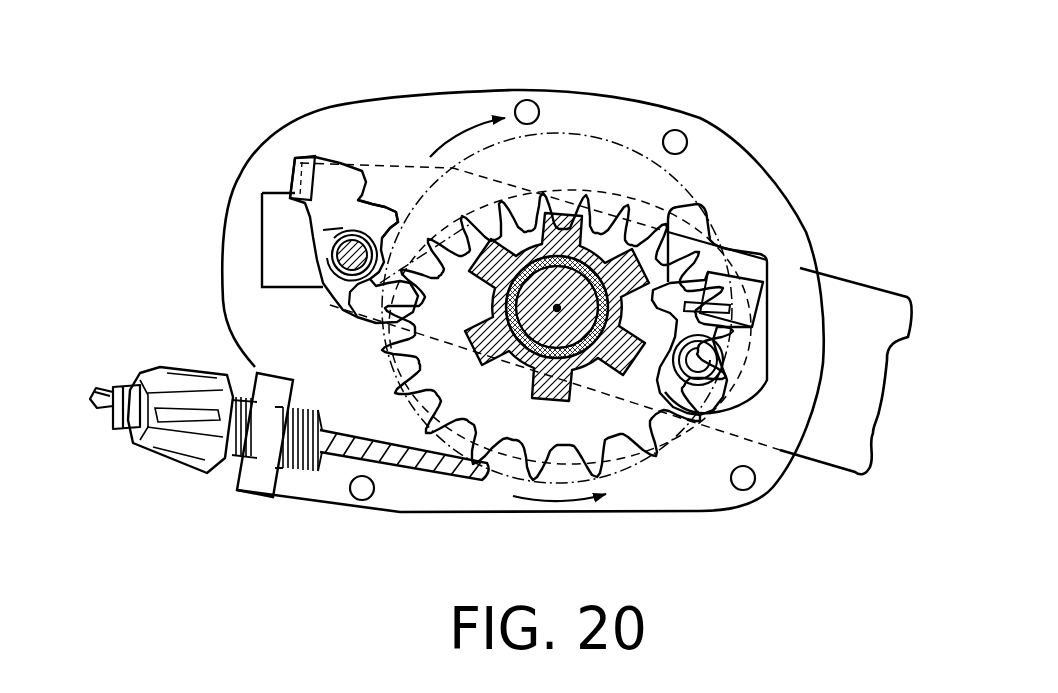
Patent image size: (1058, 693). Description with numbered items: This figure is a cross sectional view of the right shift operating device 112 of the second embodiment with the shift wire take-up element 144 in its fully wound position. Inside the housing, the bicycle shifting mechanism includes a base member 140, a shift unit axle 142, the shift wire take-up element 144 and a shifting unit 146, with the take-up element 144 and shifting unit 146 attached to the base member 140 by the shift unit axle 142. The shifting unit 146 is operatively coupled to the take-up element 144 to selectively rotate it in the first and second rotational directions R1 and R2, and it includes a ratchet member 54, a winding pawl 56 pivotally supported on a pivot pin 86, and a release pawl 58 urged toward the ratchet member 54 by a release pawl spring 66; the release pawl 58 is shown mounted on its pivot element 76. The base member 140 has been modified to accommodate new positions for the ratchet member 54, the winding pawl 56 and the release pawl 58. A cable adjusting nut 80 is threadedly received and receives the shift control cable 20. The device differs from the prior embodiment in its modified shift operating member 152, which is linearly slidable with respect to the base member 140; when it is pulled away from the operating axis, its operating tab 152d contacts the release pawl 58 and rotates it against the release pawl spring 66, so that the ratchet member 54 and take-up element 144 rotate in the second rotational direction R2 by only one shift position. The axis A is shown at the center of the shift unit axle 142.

The base member 140 is at (506, 86).
The shift operating device 112 is at (758, 100).
The shifting unit 146 is at (703, 176).
The ratchet member 54 is at (601, 448).
The shift unit axle 142 is at (571, 300).
The axis A (B) A is at (558, 308).
The shift operating member 152 is at (874, 284).
The release pawl 58 is at (305, 222).
The operating tab 152d is at (292, 172).
The release pawl spring 66 is at (372, 200).
The pivot pin 76 is at (352, 255).
The cable adjusting nut 80 is at (165, 365).
The shift control cable 20 is at (118, 432).
The shift wire take-up element 144 is at (502, 479).
The winding pawl 56 is at (767, 380).
The pivot pin 86 is at (698, 362).
The second rotational direction R2 is at (455, 135).
The first rotational direction R1 is at (548, 505).